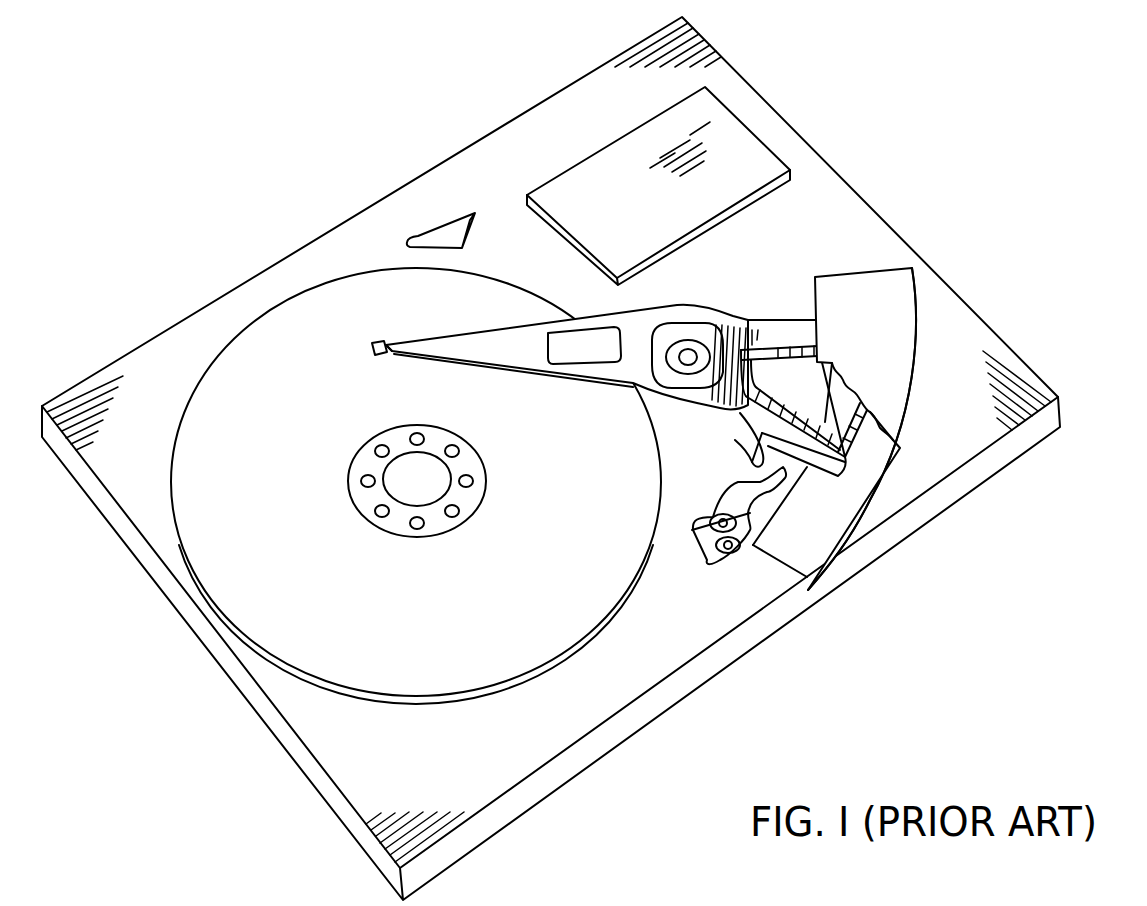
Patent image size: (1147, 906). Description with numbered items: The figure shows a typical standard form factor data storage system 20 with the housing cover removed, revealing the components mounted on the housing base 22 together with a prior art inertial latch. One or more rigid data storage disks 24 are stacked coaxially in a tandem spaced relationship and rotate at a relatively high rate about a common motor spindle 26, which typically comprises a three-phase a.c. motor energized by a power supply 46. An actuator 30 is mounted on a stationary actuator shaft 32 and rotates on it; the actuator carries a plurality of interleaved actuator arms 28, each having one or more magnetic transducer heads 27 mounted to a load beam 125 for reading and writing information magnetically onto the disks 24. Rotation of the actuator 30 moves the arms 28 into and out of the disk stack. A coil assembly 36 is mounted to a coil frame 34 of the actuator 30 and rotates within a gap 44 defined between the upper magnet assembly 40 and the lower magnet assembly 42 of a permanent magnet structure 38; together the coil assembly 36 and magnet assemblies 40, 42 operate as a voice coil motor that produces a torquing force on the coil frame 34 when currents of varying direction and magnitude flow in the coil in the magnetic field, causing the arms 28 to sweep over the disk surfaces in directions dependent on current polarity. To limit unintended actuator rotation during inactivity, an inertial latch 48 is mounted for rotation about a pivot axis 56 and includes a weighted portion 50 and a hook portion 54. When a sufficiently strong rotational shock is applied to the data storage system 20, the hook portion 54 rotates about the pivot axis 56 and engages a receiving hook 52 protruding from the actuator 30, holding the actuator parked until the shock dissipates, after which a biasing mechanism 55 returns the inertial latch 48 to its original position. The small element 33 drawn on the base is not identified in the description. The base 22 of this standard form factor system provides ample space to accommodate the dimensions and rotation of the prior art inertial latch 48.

The data storage system 20 is at (551, 458).
The housing base 22 is at (723, 657).
The rigid data storage disk 24 is at (203, 470).
The motor spindle 26 is at (451, 527).
The magnetic transducer head 27 is at (373, 343).
The actuator arm 28 is at (522, 350).
The actuator 30 is at (703, 407).
The actuator shaft 32 is at (687, 349).
The ramp 33 is at (460, 210).
The coil frame 34 is at (742, 325).
The coil assembly 36 is at (765, 360).
The permanent magnet structure 38 is at (918, 300).
The upper magnet assembly 40 is at (893, 349).
The lower magnet assembly 42 is at (776, 545).
The gap 44 is at (884, 438).
The power supply 46 is at (599, 223).
The inertial latch 48 is at (713, 507).
The weighted portion 50 is at (718, 550).
The receiving hook 52 is at (745, 453).
The hook portion 54 is at (778, 510).
The biasing mechanism 55 is at (777, 548).
The pivot axis 56 is at (712, 527).
The load beam 125 is at (397, 353).